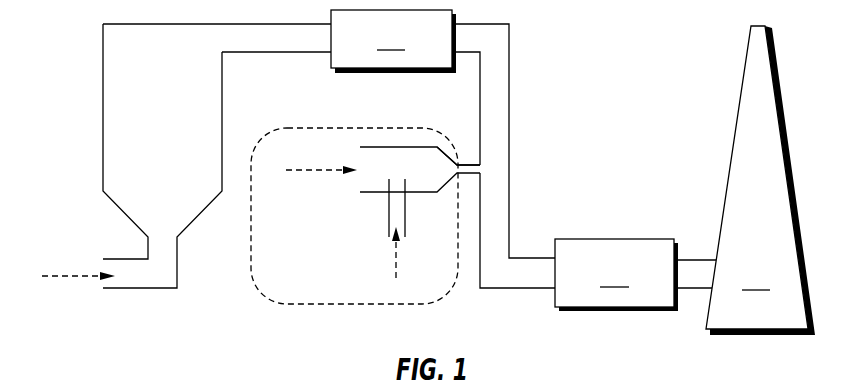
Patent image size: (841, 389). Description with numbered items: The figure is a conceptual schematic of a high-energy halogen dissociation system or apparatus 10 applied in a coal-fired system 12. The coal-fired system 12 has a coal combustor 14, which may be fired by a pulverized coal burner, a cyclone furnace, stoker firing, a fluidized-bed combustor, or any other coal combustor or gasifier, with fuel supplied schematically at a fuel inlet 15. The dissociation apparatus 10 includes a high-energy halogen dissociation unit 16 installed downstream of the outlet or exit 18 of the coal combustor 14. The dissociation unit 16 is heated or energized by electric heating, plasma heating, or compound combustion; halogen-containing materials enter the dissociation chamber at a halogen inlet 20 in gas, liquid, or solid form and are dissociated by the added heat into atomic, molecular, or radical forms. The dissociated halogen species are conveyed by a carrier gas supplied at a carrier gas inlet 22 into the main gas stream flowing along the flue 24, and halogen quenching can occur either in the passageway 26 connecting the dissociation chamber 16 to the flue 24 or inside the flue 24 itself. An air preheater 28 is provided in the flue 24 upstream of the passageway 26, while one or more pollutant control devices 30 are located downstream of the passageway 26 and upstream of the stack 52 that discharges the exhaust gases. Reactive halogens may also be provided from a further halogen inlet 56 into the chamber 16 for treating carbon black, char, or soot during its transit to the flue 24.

The high-energy halogen dissociation system 10 is at (309, 128).
The coal-fired system 12 is at (96, 63).
The coal combustor 14 is at (180, 141).
The fuel inlet 15 is at (122, 268).
The high-energy halogen dissociation unit 16 is at (440, 179).
The outlet of the coal combustor 18 is at (224, 34).
The halogen inlet 20 is at (392, 219).
The carrier gas inlet 22 is at (313, 172).
The flue 24 is at (497, 218).
The passageway 26 is at (463, 160).
The air preheater 28 is at (405, 50).
The pollutant control device 30 is at (629, 287).
The stack 52 is at (770, 290).
The halogen inlet 56 is at (393, 262).